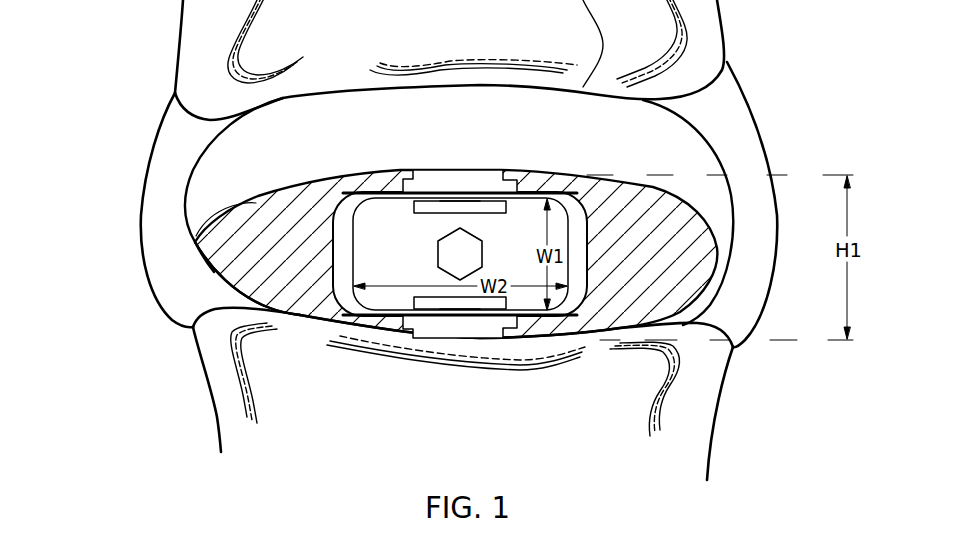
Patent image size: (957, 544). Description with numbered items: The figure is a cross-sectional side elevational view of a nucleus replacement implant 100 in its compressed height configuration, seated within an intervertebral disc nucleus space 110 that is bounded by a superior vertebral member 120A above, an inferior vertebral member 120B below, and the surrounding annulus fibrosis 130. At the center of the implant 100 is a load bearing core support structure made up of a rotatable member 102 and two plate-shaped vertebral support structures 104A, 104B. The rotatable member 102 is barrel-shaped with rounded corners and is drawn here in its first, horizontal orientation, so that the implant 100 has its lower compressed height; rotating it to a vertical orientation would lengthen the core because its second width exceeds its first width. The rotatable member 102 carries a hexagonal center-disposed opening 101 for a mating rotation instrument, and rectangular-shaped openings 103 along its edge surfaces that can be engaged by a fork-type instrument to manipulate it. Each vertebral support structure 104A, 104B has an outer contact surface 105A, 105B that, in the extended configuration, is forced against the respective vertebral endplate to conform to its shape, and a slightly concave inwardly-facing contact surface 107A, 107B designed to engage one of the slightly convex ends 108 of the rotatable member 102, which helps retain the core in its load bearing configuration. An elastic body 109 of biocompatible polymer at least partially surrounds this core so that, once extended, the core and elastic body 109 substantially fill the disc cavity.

The nucleus replacement implant 100 is at (561, 259).
The center-disposed opening 101 is at (476, 267).
The rotatable member 102 is at (372, 210).
The rectangular-shaped openings 103 is at (433, 193).
The vertebral support structure 104A is at (493, 186).
The vertebral support structure 104B is at (478, 309).
The outer contact surface 105A is at (446, 178).
The outer contact surface 105B is at (433, 335).
The inwardly-facing contact surface 107A is at (460, 192).
The inwardly-facing contact surface 107B is at (457, 320).
The slightly convex ends 108 is at (353, 255).
The elastic body 109 is at (227, 267).
The intervertebral disc nucleus space 110 is at (233, 163).
The superior vertebral member 120A is at (503, 13).
The inferior vertebral member 120B is at (487, 441).
The annulus fibrosis 130 is at (160, 205).